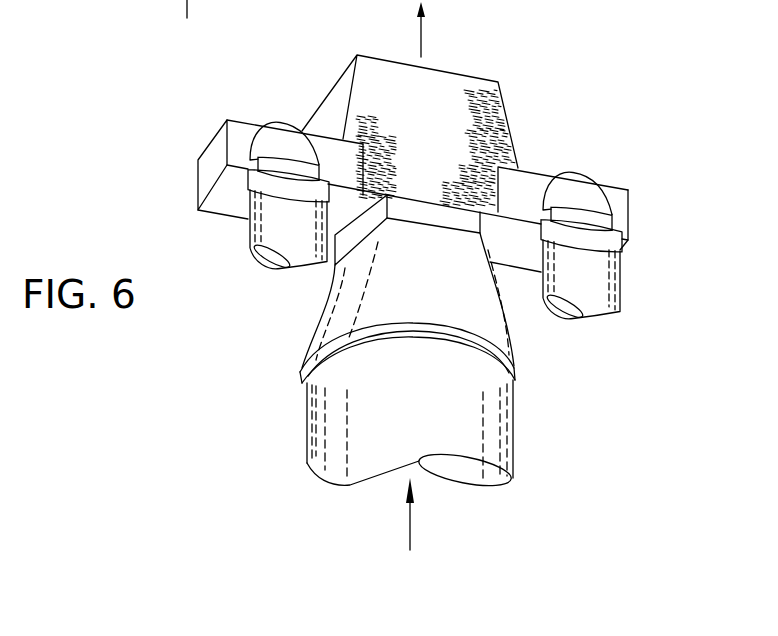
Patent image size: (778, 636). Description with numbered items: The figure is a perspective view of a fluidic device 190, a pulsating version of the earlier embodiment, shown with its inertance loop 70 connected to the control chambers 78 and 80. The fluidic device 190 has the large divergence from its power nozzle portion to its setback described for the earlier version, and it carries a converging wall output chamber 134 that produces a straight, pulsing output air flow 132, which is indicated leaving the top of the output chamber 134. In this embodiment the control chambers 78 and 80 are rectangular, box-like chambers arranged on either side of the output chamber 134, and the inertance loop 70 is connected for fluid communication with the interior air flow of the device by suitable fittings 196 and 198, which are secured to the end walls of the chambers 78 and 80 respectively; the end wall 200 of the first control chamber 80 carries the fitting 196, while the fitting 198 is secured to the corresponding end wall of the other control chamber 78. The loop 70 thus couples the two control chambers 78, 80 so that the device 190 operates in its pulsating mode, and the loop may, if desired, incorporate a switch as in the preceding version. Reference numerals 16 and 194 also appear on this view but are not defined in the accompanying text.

The dispensing system 16 is at (188, 7).
The inertance loop 70 is at (255, 193).
The control chamber 78 is at (628, 199).
The control chamber 80 is at (408, 186).
The pulsing output air flow 132 is at (421, 33).
The converging wall output chamber 134 is at (516, 101).
The fluidic device 190 is at (471, 112).
The mounting bar end 194 is at (632, 218).
The fitting 196 is at (272, 137).
The fitting 198 is at (568, 190).
The end wall 200 is at (240, 158).